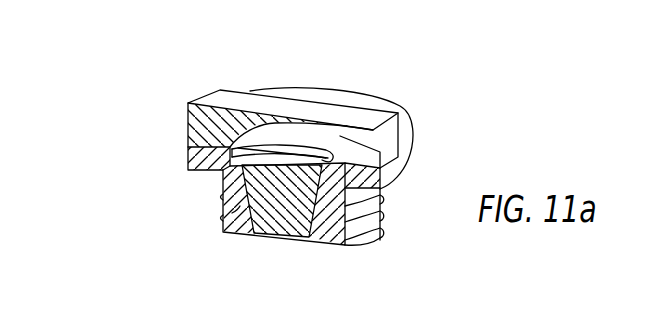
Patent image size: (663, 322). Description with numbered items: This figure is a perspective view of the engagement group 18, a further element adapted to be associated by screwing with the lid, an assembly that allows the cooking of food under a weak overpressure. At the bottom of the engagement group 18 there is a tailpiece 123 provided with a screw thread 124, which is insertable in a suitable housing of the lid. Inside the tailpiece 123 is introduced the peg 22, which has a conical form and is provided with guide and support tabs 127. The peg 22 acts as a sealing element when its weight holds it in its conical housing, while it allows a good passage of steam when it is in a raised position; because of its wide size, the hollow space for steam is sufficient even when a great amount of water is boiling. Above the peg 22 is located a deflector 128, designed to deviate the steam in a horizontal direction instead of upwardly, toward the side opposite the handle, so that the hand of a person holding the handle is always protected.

The engagement group 18 is at (148, 192).
The peg 22 is at (282, 192).
The tailpiece 123 is at (227, 223).
The screw thread 124 is at (374, 218).
The guide and support tabs 127 is at (188, 161).
The deflector 128 is at (238, 99).